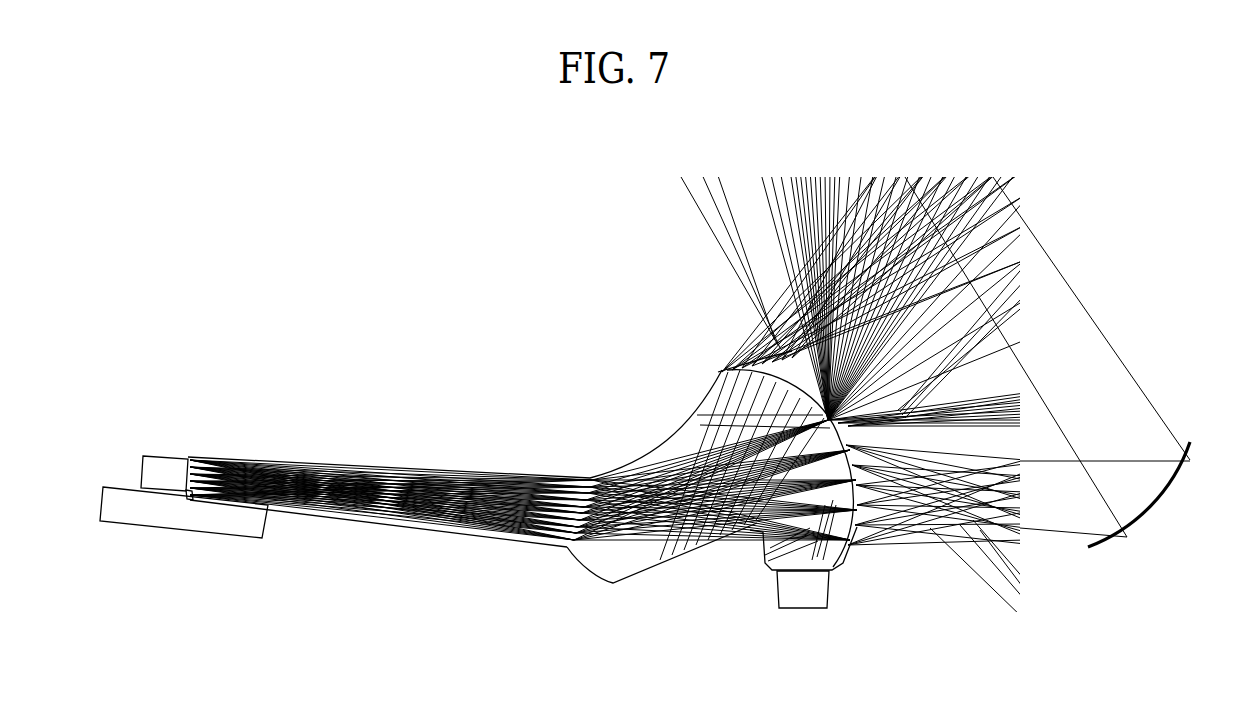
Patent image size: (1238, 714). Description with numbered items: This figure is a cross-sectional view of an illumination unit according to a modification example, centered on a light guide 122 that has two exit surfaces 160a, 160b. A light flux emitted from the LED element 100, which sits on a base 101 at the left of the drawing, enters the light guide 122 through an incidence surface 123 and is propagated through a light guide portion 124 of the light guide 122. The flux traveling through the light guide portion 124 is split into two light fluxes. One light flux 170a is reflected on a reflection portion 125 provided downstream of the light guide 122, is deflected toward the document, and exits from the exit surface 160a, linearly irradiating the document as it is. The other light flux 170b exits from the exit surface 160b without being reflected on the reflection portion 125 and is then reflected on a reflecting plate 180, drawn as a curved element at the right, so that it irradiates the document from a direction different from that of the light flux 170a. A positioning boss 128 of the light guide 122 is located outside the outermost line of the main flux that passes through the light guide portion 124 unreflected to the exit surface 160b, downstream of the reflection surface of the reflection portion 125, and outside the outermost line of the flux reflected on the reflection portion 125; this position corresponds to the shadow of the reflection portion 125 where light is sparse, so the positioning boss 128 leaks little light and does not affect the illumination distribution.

The LED element 100 is at (160, 462).
The substrate 101 is at (220, 527).
The incidence surface 123 is at (187, 493).
The light guide 122 is at (663, 452).
The light guide portion 124 is at (413, 527).
The reflection portion 125 is at (657, 568).
The positioning boss 128 is at (802, 610).
The exit surface 160a is at (748, 360).
The exit surface 160b is at (867, 543).
The light flux 170a is at (800, 275).
The light flux 170b is at (980, 533).
The reflecting plate 180 is at (1158, 518).